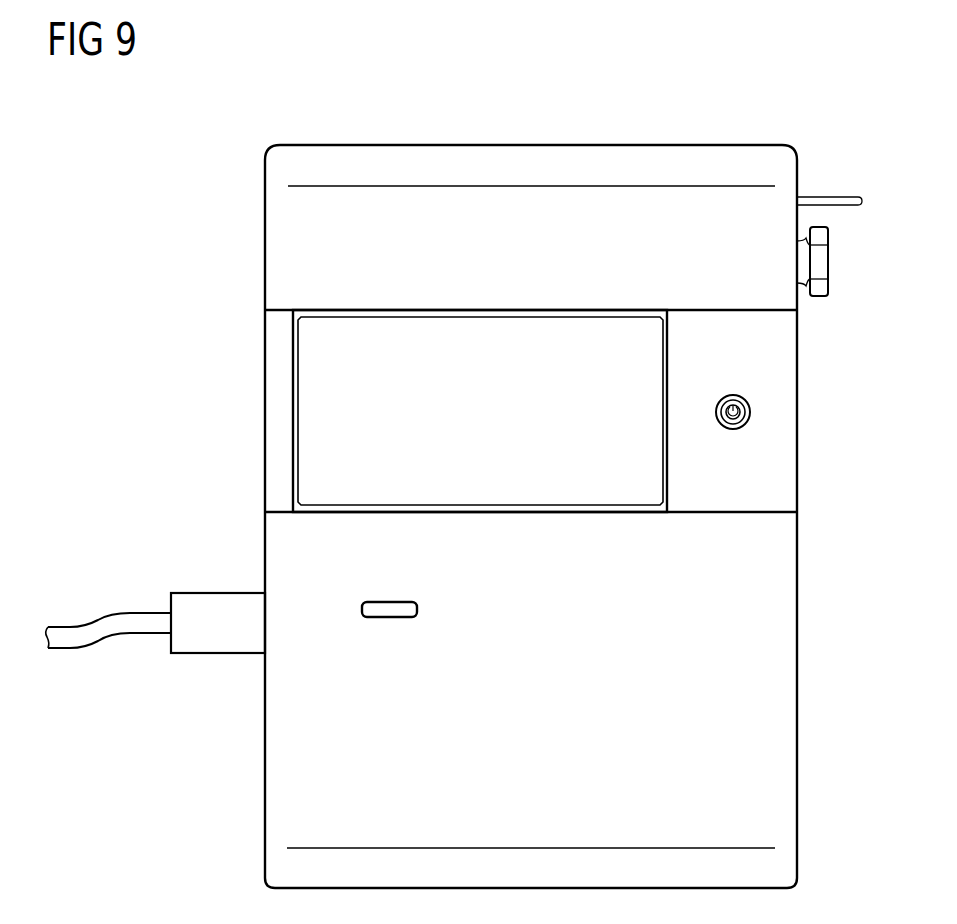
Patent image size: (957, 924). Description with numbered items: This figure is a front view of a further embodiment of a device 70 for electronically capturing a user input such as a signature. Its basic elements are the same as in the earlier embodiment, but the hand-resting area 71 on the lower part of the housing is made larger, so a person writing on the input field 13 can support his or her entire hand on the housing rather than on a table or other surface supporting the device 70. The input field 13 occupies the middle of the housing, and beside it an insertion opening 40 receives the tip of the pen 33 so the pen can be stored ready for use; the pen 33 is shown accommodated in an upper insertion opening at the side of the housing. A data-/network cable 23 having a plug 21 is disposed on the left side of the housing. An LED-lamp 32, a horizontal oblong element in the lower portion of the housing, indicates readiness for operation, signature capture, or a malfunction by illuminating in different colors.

The device 70 is at (635, 128).
The hand-resting area 71 is at (705, 637).
The pen 33 is at (822, 263).
The input field 13 is at (654, 467).
The insertion opening 40 is at (733, 395).
The LED-lamp 32 is at (393, 612).
The plug 21 is at (219, 600).
The data-/network cable 23 is at (132, 620).